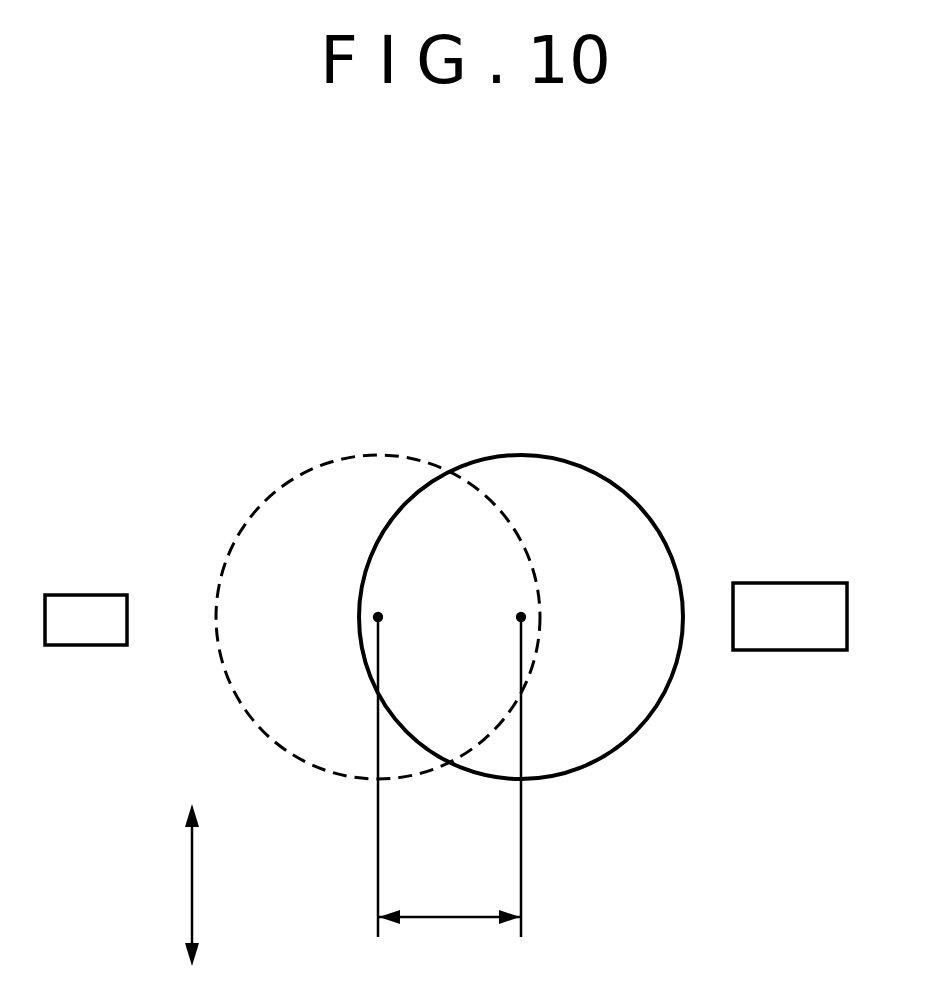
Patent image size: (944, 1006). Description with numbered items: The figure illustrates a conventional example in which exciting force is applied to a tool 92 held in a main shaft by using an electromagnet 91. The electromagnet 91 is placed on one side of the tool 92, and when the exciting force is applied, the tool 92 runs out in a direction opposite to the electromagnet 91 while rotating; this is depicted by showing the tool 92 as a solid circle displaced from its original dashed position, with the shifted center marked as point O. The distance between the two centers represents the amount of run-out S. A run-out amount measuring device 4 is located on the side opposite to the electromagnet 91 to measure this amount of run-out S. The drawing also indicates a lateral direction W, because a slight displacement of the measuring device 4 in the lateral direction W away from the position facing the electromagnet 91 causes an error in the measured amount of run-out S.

The run-out amount measuring device 4 is at (82, 627).
The electromagnet 91 is at (798, 606).
The tool 92 is at (600, 530).
The rotation center O is at (520, 610).
The amount of run-out S is at (449, 897).
The lateral direction W is at (173, 885).